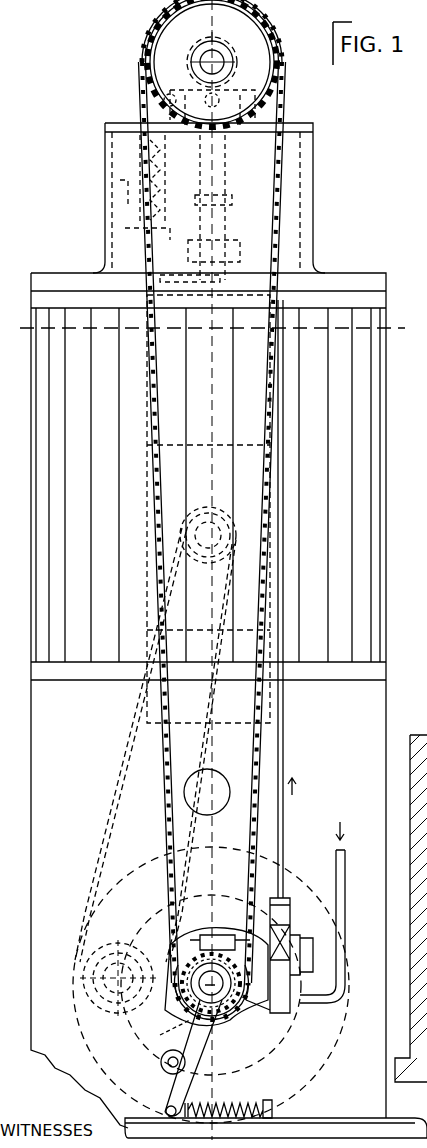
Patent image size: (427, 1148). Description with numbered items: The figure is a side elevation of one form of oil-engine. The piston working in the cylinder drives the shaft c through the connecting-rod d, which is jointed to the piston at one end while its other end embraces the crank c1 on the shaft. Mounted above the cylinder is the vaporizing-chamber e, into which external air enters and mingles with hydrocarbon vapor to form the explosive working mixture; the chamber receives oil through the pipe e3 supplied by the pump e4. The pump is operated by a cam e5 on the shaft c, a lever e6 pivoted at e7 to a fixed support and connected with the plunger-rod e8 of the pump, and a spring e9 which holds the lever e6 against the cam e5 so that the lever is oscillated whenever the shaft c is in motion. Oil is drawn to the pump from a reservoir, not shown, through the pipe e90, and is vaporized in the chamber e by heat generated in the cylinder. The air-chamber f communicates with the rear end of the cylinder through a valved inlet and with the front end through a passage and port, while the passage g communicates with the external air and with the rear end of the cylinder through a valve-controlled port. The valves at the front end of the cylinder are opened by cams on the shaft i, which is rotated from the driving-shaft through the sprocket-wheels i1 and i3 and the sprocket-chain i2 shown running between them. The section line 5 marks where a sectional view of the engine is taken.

The shaft i is at (205, 66).
The sprocket-wheel i3 is at (258, 66).
The sprocket-chain i2 is at (290, 137).
The vaporizing-chamber e is at (296, 200).
The air-chamber f is at (368, 700).
The section line 5 is at (205, 330).
The connecting-rod d is at (118, 752).
The passage g is at (218, 782).
The pipe e3 is at (284, 750).
The pump e4 is at (292, 930).
The pipe e90 is at (332, 890).
The shaft c is at (222, 1005).
The plunger-rod e8 is at (208, 930).
The sprocket-wheel i1 is at (250, 1000).
The cam e5 is at (193, 1058).
The pivot e7 is at (160, 1065).
The lever e6 is at (165, 1035).
The spring e9 is at (258, 1105).
The crank c1 is at (82, 985).